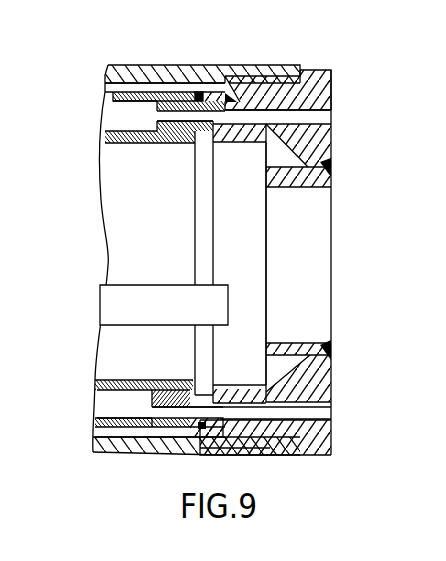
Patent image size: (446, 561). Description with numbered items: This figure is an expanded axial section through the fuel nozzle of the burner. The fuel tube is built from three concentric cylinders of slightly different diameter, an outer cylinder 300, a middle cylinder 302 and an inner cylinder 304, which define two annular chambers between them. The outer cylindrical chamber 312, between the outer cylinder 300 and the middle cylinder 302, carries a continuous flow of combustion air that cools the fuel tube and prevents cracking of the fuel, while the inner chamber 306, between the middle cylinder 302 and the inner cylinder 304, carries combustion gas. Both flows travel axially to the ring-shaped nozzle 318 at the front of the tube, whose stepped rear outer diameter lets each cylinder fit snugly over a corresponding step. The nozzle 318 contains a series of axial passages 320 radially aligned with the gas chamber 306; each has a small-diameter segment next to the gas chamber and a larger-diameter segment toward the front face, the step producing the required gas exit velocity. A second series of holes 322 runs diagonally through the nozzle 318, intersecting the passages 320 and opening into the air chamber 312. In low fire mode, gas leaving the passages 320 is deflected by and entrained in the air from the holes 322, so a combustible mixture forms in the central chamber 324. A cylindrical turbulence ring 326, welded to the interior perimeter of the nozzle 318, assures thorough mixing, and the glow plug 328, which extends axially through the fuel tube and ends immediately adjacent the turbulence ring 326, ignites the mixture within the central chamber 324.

The outer cylinder 300 is at (158, 44).
The outer cylindrical chamber 312 is at (183, 88).
The middle cylinder 302 is at (111, 98).
The inner chamber 306 is at (112, 120).
The inner cylinder 304 is at (110, 137).
The diagonal holes 322 is at (237, 97).
The nozzle 318 is at (333, 92).
The axial passages 320 is at (327, 120).
The turbulence ring 326 is at (320, 188).
The central chamber 324 is at (310, 300).
The glow plug 328 is at (218, 310).